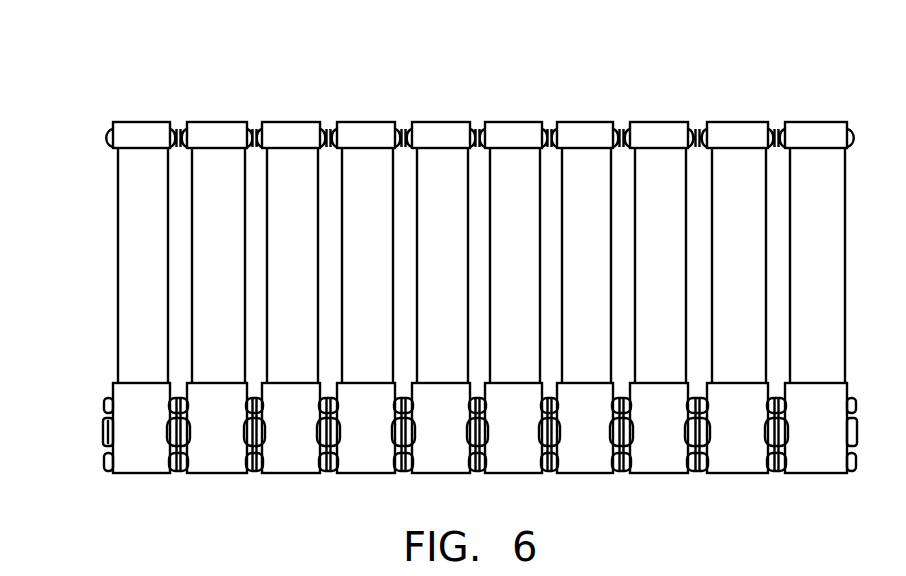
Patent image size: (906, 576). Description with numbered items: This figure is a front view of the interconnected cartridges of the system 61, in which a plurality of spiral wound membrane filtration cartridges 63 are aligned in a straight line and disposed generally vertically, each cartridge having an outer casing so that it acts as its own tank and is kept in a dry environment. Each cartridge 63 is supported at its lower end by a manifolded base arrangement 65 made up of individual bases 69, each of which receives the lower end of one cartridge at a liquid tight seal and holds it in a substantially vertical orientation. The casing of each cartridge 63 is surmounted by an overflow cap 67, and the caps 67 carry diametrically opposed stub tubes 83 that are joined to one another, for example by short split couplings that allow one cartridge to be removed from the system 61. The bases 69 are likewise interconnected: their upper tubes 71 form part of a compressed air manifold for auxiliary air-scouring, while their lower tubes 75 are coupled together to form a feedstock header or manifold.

The system 61 is at (520, 68).
The spiral wound membrane filtration cartridge 63 is at (127, 247).
The manifolded base arrangement 65 is at (80, 432).
The overflow cap 67 is at (293, 122).
The base 69 is at (583, 455).
The upper tube 71 is at (104, 405).
The lower tube 75 is at (104, 462).
The stub tube 83 is at (106, 137).